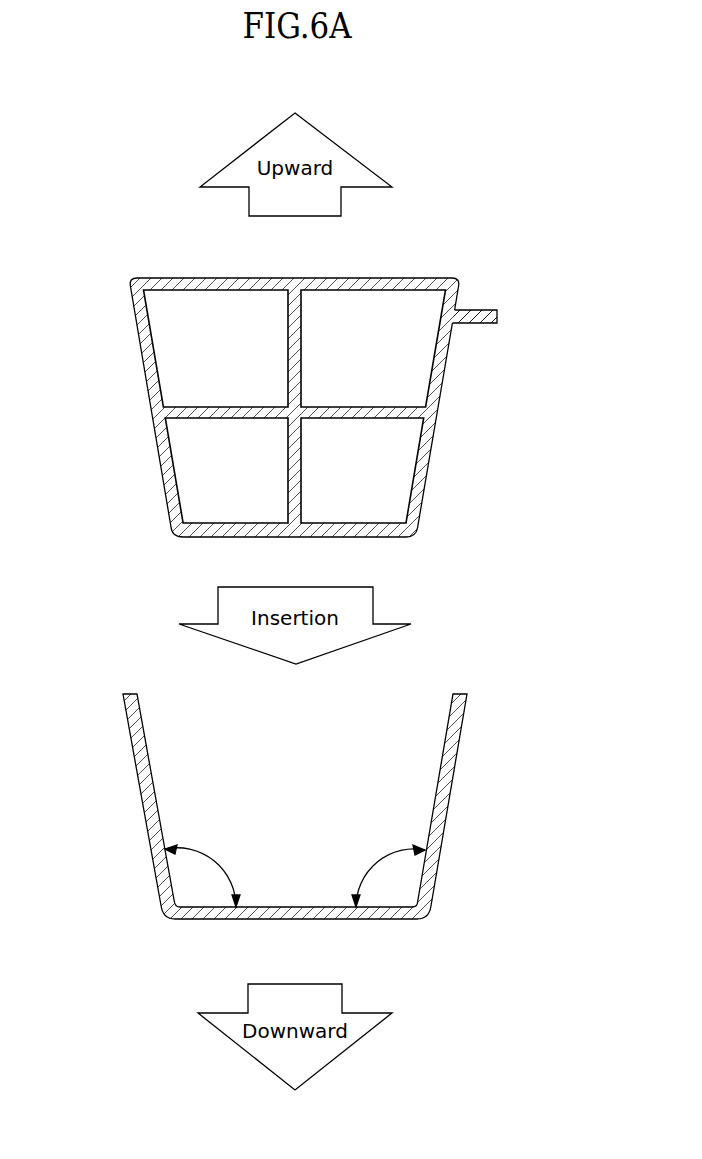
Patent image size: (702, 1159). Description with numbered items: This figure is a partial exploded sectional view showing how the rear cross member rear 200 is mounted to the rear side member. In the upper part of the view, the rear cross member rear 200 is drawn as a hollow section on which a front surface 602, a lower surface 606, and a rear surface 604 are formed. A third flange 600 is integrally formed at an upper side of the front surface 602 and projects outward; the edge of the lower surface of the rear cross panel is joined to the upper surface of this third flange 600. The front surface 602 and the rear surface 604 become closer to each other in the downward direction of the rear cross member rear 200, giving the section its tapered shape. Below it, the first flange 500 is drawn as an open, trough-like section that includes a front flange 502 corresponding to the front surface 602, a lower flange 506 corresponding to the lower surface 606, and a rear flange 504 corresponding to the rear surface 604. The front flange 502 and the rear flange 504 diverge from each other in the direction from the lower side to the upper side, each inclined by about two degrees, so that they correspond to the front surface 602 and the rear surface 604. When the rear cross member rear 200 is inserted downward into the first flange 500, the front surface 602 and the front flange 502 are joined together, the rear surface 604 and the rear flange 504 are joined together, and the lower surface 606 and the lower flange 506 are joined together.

The rear cross member rear 200 is at (312, 420).
The third flange 600 is at (475, 310).
The front surface 602 is at (428, 475).
The rear surface 604 is at (163, 477).
The lower surface 606 is at (380, 537).
The first flange 500 is at (312, 838).
The front flange 502 is at (440, 853).
The rear flange 504 is at (153, 863).
The lower flange 506 is at (392, 922).